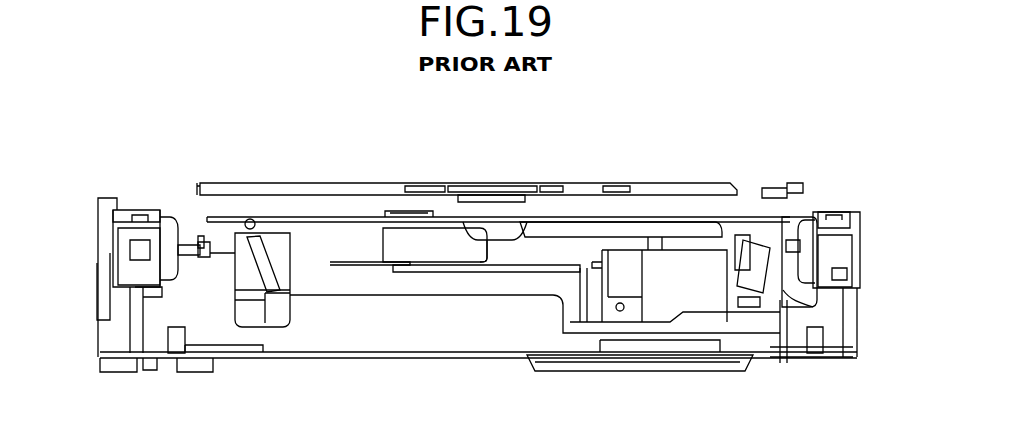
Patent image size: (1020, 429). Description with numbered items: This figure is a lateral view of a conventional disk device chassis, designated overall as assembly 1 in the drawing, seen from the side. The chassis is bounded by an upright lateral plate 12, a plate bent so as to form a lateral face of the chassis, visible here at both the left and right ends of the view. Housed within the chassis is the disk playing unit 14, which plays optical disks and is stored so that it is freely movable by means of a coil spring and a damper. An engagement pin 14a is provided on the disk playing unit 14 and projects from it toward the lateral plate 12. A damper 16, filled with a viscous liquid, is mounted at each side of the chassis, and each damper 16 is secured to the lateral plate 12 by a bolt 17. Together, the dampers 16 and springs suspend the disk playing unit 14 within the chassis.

The disk drive device 1 is at (474, 183).
The upright lateral plate 12 is at (130, 303).
The disk playing unit 14 is at (203, 243).
The engagement pin 14a is at (200, 240).
The damper 16 is at (172, 230).
The bolt 17 is at (143, 212).